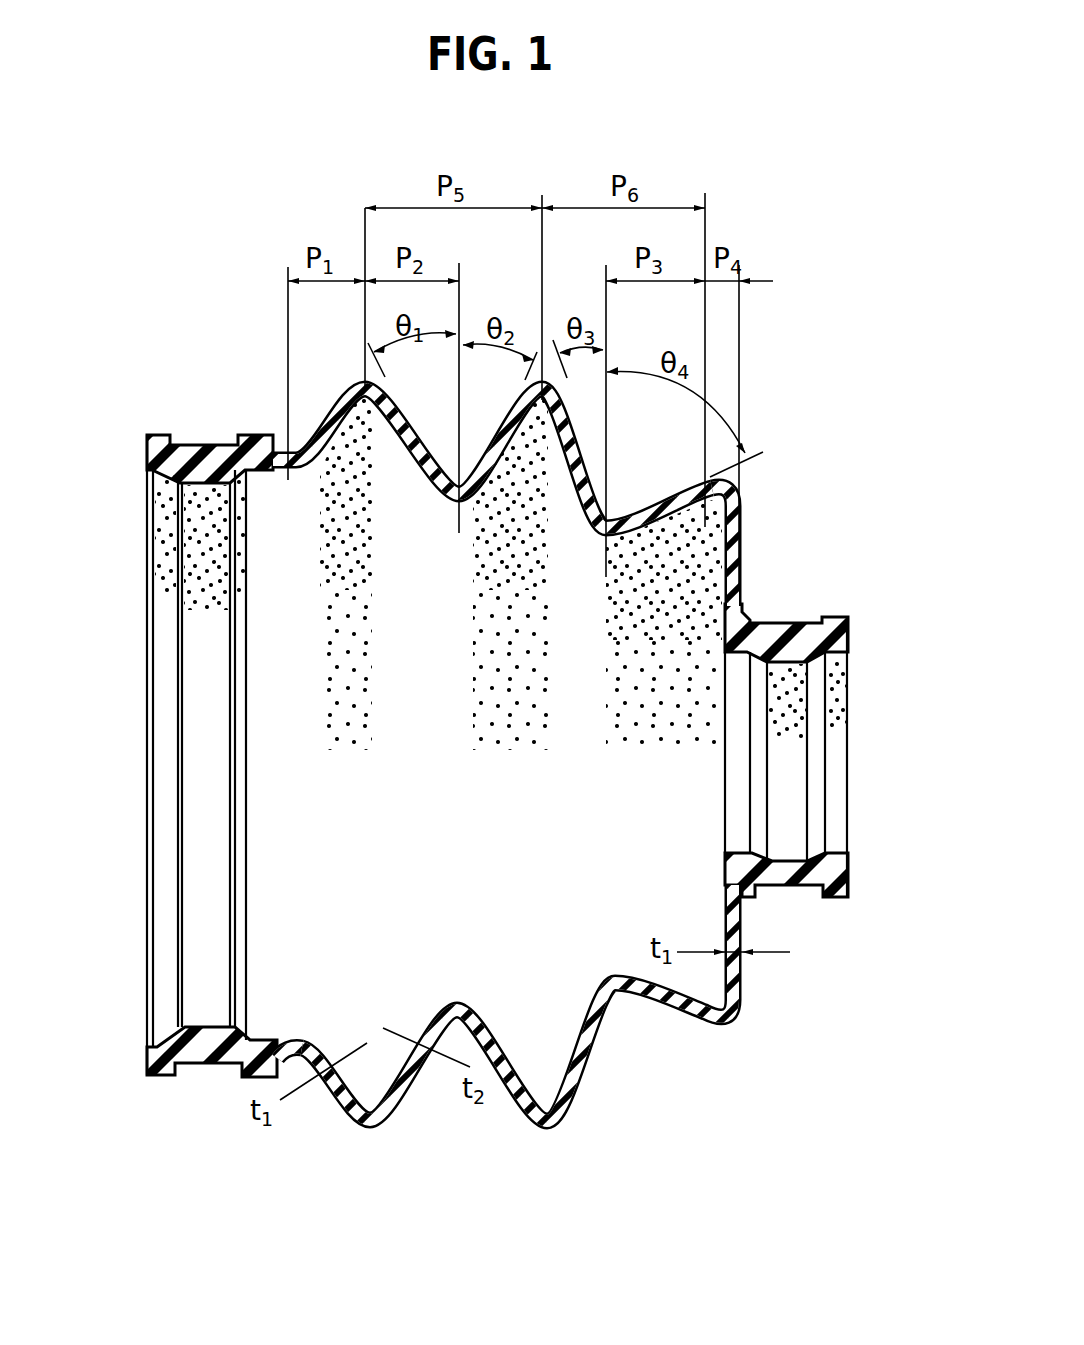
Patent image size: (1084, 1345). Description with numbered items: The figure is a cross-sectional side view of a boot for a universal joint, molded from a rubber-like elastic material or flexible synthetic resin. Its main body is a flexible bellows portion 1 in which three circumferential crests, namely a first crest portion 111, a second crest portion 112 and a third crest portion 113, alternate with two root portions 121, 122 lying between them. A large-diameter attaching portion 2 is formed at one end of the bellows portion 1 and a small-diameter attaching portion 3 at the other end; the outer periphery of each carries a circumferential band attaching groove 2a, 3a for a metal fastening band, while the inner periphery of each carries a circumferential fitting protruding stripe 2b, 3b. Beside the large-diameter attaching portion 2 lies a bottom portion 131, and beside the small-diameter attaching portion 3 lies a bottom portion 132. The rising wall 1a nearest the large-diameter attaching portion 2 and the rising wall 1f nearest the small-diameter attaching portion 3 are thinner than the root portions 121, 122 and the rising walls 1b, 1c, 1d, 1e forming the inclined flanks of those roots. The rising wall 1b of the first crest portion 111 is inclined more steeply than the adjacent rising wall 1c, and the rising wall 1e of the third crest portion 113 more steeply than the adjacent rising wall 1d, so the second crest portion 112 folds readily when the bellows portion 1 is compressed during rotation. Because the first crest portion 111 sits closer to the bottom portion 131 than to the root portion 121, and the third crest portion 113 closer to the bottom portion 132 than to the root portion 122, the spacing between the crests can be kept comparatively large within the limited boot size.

The bellows portion 1 is at (531, 770).
The rising wall 1a is at (327, 423).
The rising wall 1b is at (398, 455).
The rising wall 1c is at (506, 450).
The rising wall 1d is at (580, 470).
The rising wall 1e is at (662, 530).
The rising wall 1f is at (735, 558).
The large-diameter attaching portion 2 is at (178, 743).
The band attaching groove 2a is at (202, 442).
The fitting protruding stripe 2b is at (213, 1023).
The small-diameter attaching portion 3 is at (830, 726).
The band attaching groove 3a is at (788, 623).
The fitting protruding stripe 3b is at (790, 847).
The first crest portion 111 is at (370, 1128).
The second crest portion 112 is at (552, 1130).
The third crest portion 113 is at (730, 1027).
The root portion 121 is at (462, 1003).
The root portion 122 is at (607, 975).
The bottom portion 131 is at (298, 1040).
The bottom portion 132 is at (747, 898).